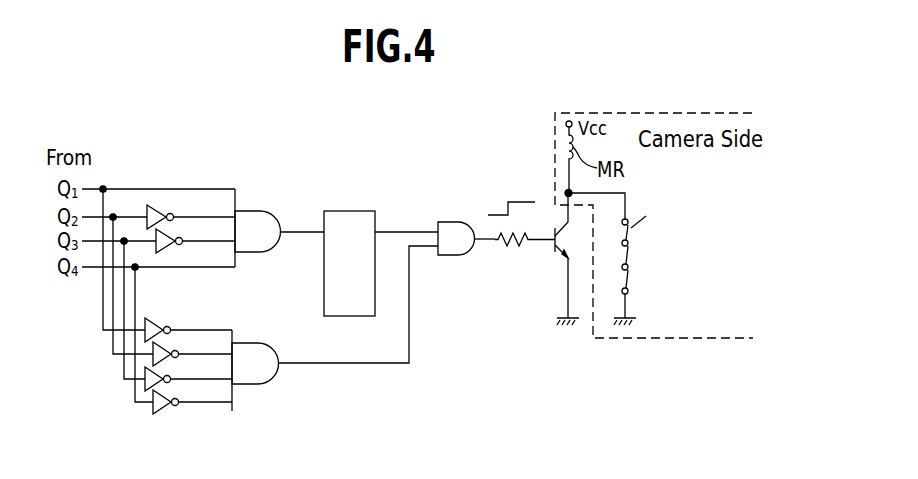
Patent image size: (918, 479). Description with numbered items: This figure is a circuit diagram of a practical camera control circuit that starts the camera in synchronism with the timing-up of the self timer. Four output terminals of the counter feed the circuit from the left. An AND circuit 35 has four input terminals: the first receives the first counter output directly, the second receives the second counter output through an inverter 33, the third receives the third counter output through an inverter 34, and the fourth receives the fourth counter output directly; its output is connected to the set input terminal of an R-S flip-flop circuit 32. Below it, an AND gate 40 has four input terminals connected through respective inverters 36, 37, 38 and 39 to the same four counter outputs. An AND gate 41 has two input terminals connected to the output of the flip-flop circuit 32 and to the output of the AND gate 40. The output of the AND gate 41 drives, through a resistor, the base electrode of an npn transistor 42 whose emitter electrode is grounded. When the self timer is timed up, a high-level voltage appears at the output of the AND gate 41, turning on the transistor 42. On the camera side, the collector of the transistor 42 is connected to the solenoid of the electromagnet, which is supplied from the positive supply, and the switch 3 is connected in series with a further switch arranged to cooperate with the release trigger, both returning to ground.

The switch 3 is at (630, 271).
The R-S flip-flop circuit 32 is at (350, 211).
The inverter 33 is at (154, 212).
The inverter 34 is at (163, 250).
The AND circuit 35 is at (262, 211).
The inverter 36 is at (148, 322).
The inverter 37 is at (165, 345).
The inverter 38 is at (150, 384).
The inverter 39 is at (163, 404).
The AND gate 40 is at (259, 347).
The AND gate 41 is at (448, 222).
The npn transistor 42 is at (553, 243).